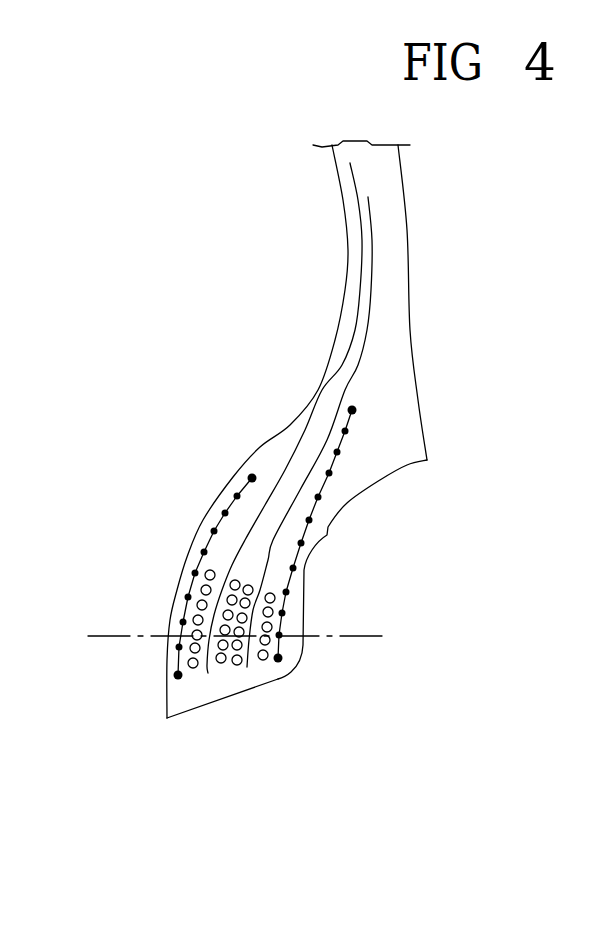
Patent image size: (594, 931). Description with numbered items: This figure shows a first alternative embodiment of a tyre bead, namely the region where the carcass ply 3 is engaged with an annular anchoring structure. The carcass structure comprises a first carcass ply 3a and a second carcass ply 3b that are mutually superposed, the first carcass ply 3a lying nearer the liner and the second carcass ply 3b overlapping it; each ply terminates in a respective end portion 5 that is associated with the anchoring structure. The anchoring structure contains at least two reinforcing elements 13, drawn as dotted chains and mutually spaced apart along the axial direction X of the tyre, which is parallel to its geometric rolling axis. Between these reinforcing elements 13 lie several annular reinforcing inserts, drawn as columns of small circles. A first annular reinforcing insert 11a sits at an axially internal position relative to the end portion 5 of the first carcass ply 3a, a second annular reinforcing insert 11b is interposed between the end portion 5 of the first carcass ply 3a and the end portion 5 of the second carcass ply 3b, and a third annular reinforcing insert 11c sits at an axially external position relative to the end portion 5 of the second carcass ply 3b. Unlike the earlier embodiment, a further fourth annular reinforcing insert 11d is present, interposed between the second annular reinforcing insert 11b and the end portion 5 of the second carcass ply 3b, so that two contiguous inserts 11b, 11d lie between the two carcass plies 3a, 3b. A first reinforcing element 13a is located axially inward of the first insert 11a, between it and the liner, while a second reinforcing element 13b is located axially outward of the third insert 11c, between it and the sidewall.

The carcass ply 3 is at (360, 172).
The first carcass ply 3a is at (360, 271).
The second carcass ply 3b is at (372, 290).
The end portion of carcass ply 5 is at (218, 664).
The first annular reinforcing insert 11a is at (194, 668).
The second annular reinforcing insert 11b is at (232, 665).
The third annular reinforcing insert 11c is at (266, 660).
The fourth annular reinforcing insert 11d is at (238, 667).
The reinforcing element 13 is at (218, 518).
The first reinforcing element 13a is at (177, 660).
The second reinforcing element 13b is at (290, 580).
The axial direction X is at (118, 636).